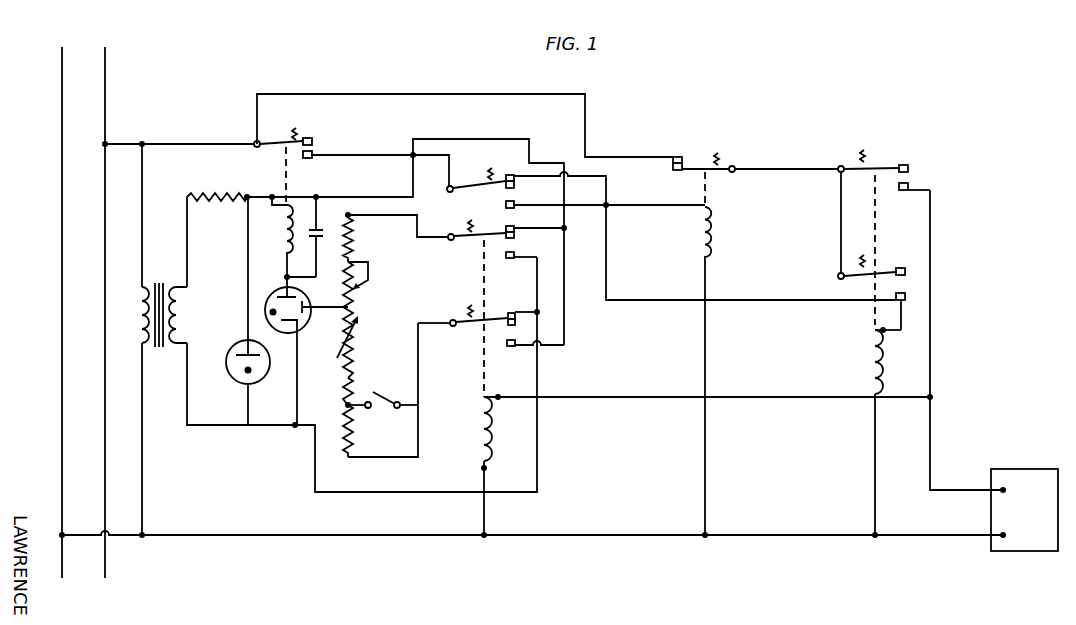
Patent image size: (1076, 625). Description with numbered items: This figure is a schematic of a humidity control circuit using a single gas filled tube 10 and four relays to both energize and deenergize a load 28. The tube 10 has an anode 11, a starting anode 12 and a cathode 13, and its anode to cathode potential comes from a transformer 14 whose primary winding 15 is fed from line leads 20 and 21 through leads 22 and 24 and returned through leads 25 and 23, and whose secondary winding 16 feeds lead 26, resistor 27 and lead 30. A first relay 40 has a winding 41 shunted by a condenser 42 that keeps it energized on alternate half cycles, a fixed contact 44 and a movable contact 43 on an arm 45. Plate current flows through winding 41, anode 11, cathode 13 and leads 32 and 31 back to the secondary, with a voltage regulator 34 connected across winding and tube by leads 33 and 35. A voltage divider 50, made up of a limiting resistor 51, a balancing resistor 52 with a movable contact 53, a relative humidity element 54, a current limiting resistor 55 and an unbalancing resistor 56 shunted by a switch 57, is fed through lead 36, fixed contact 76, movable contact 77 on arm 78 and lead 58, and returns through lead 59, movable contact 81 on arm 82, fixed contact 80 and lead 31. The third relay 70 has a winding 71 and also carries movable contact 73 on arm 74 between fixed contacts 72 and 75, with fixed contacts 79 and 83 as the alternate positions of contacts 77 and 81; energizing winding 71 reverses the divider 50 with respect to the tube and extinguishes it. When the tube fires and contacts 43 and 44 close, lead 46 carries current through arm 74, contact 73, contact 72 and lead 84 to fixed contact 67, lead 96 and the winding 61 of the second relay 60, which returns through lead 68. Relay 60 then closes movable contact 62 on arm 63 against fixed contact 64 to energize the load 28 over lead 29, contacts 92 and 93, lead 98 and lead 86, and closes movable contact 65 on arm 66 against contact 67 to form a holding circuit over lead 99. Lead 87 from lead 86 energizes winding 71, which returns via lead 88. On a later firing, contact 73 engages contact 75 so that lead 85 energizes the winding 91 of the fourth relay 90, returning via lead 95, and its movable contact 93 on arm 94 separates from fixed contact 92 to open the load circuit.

The gas filled tube 10 is at (271, 291).
The anode 11 is at (294, 297).
The starting anode 12 is at (306, 307).
The cathode 13 is at (299, 322).
The transformer 14 is at (172, 282).
The primary winding 15 is at (140, 312).
The secondary winding 16 is at (170, 316).
The lead 20 is at (62, 100).
The lead 21 is at (105, 86).
The lead 22 is at (161, 144).
The lead 23 is at (117, 538).
The lead 24 is at (142, 183).
The lead 25 is at (142, 465).
The lead 26 is at (187, 244).
The resistor 27 is at (200, 197).
The load 28 is at (1012, 469).
The lead 29 is at (490, 94).
The lead 30 is at (262, 197).
The lead 31 is at (230, 425).
The lead 32 is at (297, 378).
The lead 33 is at (248, 276).
The voltage regulator 34 is at (236, 350).
The lead 35 is at (248, 386).
The lead 36 is at (526, 233).
The first relay 40 is at (335, 189).
The winding 41 is at (287, 230).
The condenser 42 is at (318, 234).
The movable contact 43 is at (313, 140).
The fixed contact 44 is at (313, 155).
The arm 45 is at (298, 141).
The lead 46 is at (377, 156).
The voltage divider 50 is at (393, 344).
The limiting resistor 51 is at (351, 238).
The balancing resistor 52 is at (351, 296).
The movable contact 53 is at (368, 272).
The relative humidity element 54 is at (354, 340).
The current limiting resistor 55 is at (351, 377).
The unbalancing resistor 56 is at (351, 432).
The switch 57 is at (385, 397).
The lead 58 is at (418, 228).
The lead 59 is at (393, 457).
The second relay 60 is at (850, 331).
The winding 61 is at (867, 357).
The movable contact 62 is at (909, 168).
The arm 63 is at (884, 163).
The fixed contact 64 is at (896, 190).
The movable contact 65 is at (906, 270).
The arm 66 is at (884, 268).
The fixed contact 67 is at (910, 288).
The lead 68 is at (875, 464).
The third relay 70 is at (477, 377).
The winding 71 is at (482, 420).
The fixed contact 72 is at (507, 175).
The movable contact 73 is at (514, 182).
The arm 74 is at (451, 192).
The fixed contact 75 is at (506, 207).
The fixed contact 76 is at (508, 226).
The movable contact 77 is at (506, 256).
The arm 78 is at (451, 240).
The fixed contact 79 is at (513, 258).
The fixed contact 80 is at (508, 313).
The movable contact 81 is at (515, 325).
The arm 82 is at (453, 326).
The fixed contact 83 is at (507, 346).
The lead 84 is at (578, 176).
The lead 85 is at (626, 205).
The lead 86 is at (931, 300).
The lead 87 is at (740, 398).
The lead 88 is at (485, 508).
The fourth relay 90 is at (755, 208).
The winding 91 is at (712, 237).
The fixed contact 92 is at (681, 156).
The movable contact 93 is at (676, 171).
The arm 94 is at (729, 172).
The lead 95 is at (706, 344).
The lead 96 is at (890, 331).
The lead 98 is at (787, 169).
The lead 99 is at (841, 215).